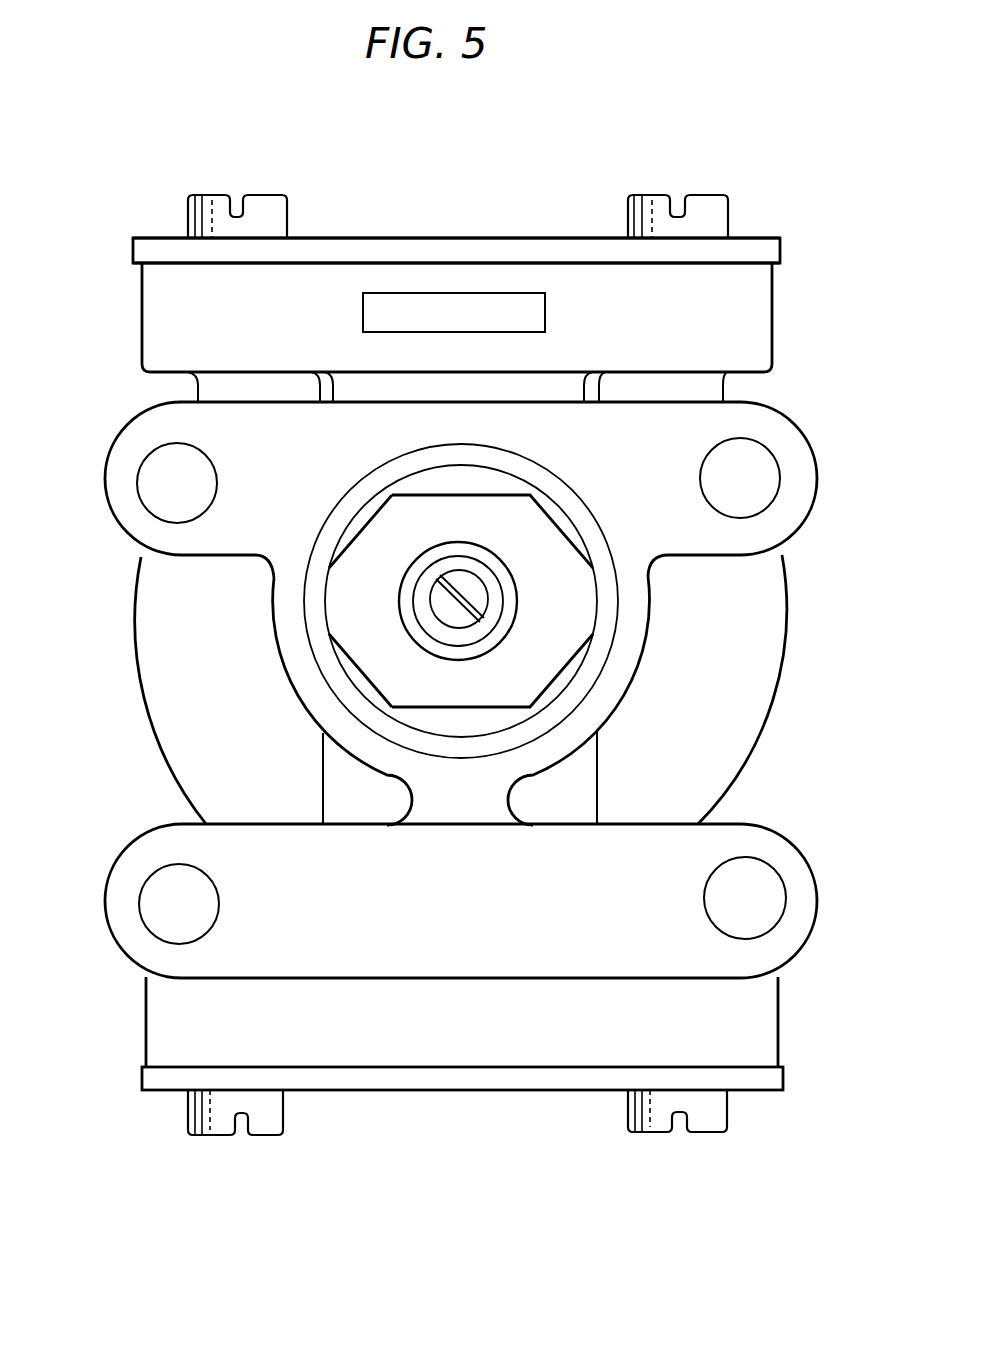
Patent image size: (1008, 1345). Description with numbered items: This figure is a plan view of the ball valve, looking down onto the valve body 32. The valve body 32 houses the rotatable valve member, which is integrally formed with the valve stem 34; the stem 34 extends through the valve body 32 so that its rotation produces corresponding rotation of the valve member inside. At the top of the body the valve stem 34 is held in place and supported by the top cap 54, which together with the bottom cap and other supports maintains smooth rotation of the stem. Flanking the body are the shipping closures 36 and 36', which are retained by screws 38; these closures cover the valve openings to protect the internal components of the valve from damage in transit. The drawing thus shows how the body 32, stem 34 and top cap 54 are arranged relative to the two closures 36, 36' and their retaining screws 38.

The valve body 32 is at (788, 618).
The valve stem 34 is at (433, 613).
The shipping closure 36 is at (462, 1128).
The shipping closure 36' is at (456, 199).
The screws 38 is at (283, 198).
The top cap 54 is at (563, 678).